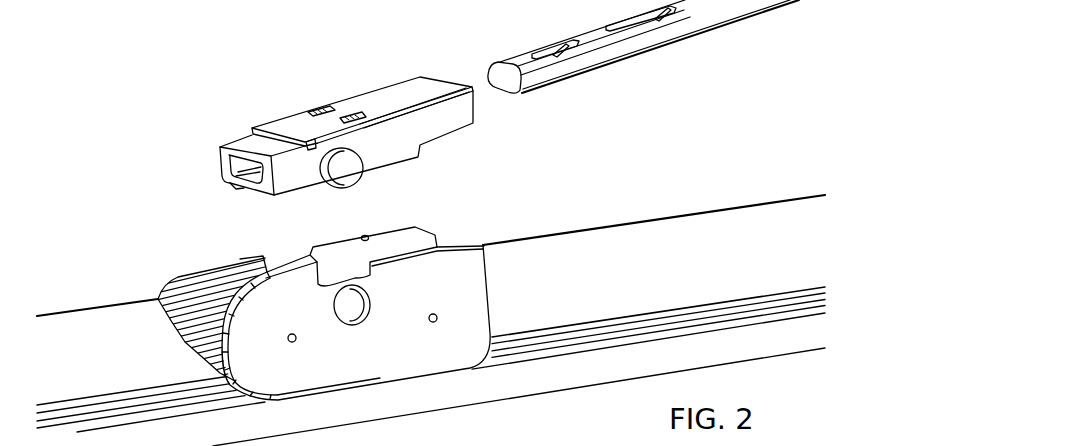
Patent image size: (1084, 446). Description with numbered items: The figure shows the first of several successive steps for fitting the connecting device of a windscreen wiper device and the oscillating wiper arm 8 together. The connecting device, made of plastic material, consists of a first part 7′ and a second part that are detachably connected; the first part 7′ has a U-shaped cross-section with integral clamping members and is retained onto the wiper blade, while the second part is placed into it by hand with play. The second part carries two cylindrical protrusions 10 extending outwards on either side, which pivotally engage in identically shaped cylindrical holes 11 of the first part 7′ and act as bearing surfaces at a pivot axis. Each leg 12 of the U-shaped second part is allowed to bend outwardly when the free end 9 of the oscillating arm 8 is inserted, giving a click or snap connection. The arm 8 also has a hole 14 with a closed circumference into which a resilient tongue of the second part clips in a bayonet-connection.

The first part 7′ is at (299, 308).
The oscillating wiper arm 8 is at (619, 60).
The free end 9 is at (502, 60).
The cylindrical protrusions 10 is at (353, 176).
The cylindrical holes 11 is at (358, 308).
The leg 12 is at (292, 197).
The hole 14 is at (580, 49).